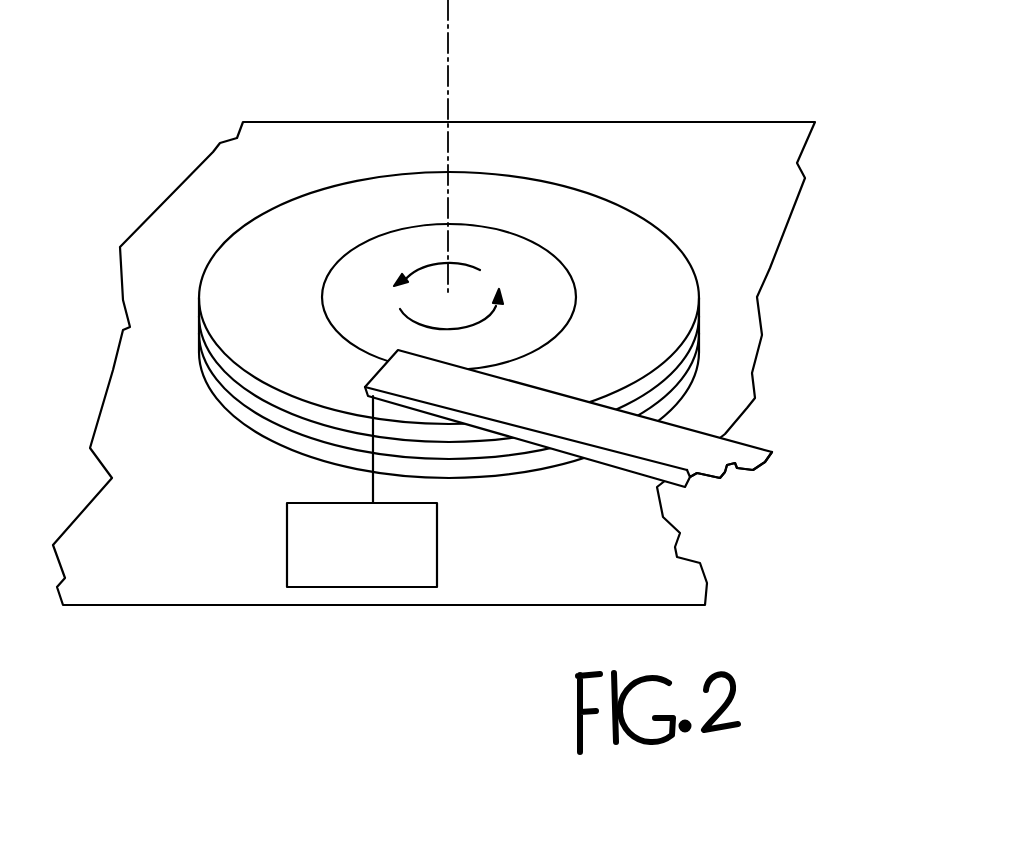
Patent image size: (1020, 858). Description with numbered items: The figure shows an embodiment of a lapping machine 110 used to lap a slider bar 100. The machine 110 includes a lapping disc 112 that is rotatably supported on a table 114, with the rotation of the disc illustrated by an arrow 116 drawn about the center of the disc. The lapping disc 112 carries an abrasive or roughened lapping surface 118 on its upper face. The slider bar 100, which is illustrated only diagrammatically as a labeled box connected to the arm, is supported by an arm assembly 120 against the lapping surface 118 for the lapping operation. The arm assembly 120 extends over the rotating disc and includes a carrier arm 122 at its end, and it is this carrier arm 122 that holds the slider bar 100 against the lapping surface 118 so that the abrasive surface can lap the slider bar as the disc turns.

The slider bar 100 is at (415, 491).
The lapping machine 110 is at (477, 302).
The lapping disc 112 is at (620, 234).
The table 114 is at (790, 137).
The arrow 116 is at (428, 264).
The lapping surface 118 is at (628, 340).
The arm assembly 120 is at (692, 422).
The carrier arm 122 is at (745, 443).